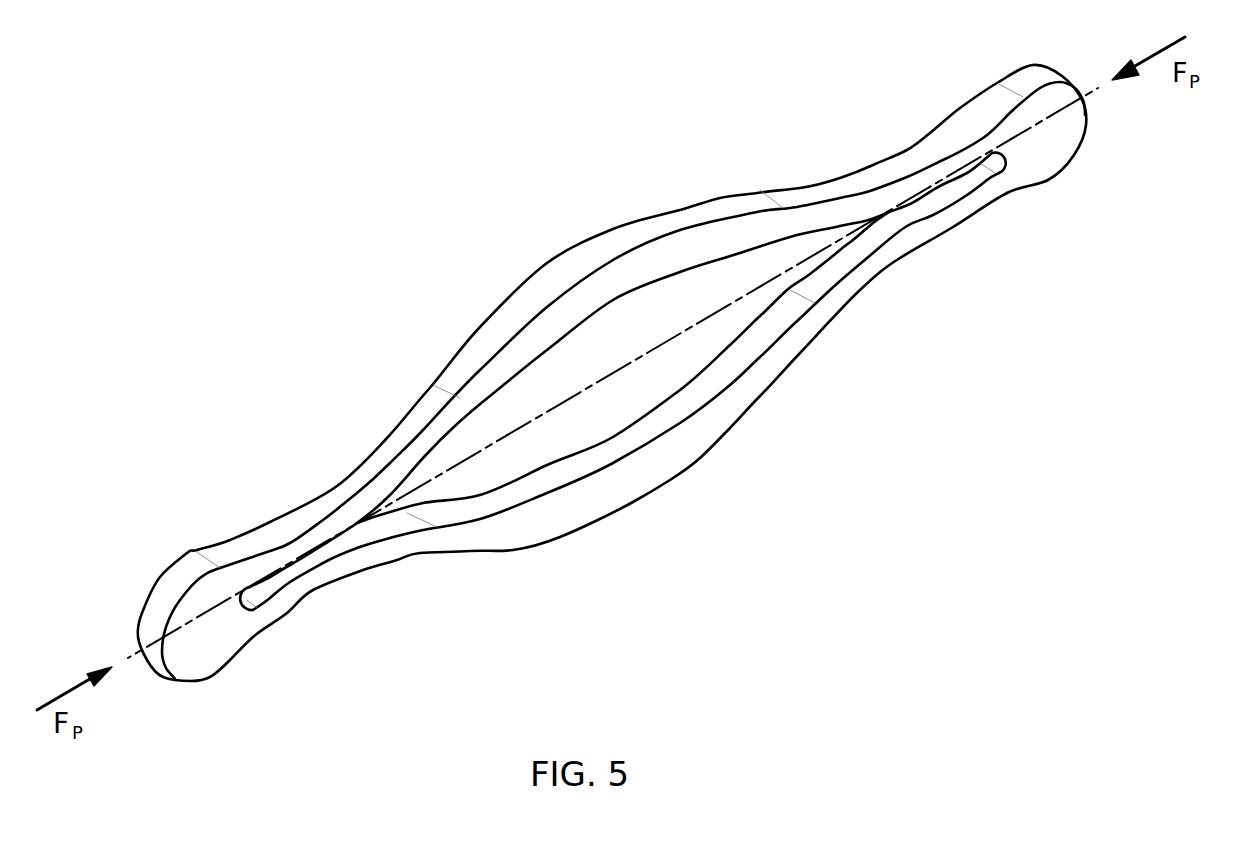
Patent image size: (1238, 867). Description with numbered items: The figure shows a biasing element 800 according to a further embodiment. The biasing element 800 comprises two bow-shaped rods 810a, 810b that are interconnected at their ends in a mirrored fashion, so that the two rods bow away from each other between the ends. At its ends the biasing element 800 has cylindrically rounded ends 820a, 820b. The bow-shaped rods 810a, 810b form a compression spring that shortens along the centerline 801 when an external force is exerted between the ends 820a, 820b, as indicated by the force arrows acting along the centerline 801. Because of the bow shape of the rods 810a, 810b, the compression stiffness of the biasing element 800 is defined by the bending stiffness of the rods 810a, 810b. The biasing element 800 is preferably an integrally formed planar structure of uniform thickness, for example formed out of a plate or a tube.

The biasing element 800 is at (383, 314).
The centerline 801 is at (610, 374).
The bow-shaped rod 810a is at (627, 237).
The bow-shaped rod 810b is at (633, 505).
The cylindrically rounded end 820a is at (167, 590).
The cylindrically rounded end 820b is at (1080, 150).